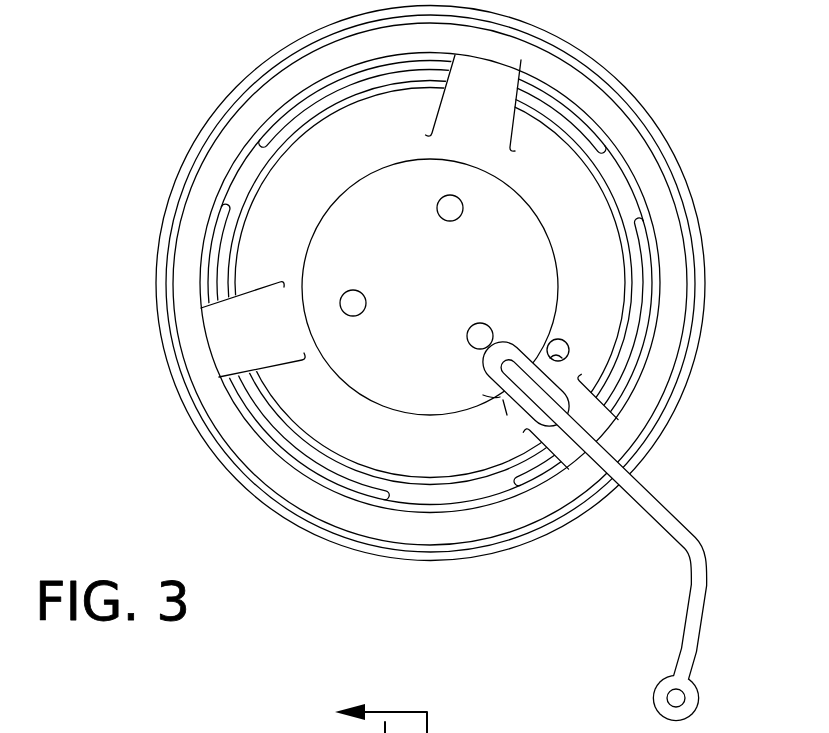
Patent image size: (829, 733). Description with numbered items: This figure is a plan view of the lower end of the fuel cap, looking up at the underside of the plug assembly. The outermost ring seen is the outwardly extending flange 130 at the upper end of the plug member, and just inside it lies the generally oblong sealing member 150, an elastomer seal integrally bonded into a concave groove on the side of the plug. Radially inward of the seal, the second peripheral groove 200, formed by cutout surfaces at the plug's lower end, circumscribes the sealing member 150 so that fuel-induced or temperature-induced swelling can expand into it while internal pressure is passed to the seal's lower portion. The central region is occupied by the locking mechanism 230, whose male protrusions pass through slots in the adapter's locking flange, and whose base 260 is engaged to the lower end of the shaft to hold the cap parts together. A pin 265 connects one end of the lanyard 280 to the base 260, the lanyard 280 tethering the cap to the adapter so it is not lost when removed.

The outwardly extending flange 130 is at (690, 223).
The sealing member 150 is at (660, 370).
The second peripheral groove 200 is at (618, 157).
The locking mechanism 230 is at (497, 97).
The base 260 is at (310, 405).
The pin 265 is at (570, 346).
The lanyard 280 is at (688, 550).